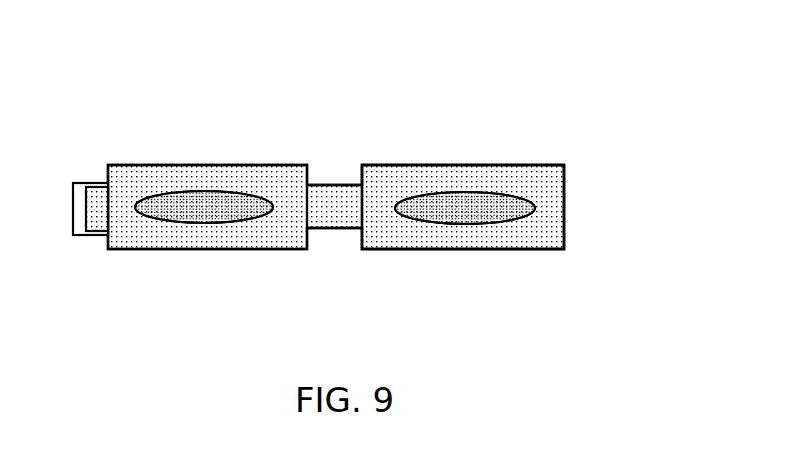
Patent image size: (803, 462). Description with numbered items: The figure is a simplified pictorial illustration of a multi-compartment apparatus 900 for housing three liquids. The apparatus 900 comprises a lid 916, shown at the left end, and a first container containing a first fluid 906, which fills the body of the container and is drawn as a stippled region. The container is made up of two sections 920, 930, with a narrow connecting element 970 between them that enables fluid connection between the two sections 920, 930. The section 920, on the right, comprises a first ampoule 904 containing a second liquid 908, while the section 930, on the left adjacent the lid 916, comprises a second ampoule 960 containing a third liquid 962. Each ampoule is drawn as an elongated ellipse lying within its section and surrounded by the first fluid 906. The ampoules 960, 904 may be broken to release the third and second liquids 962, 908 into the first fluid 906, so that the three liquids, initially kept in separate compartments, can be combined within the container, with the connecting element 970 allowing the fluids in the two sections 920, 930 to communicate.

The multi-compartment apparatus 900 is at (578, 110).
The lid 916 is at (76, 182).
The second ampoule 960 is at (160, 190).
The third liquid 962 is at (205, 220).
The narrow connecting element 970 is at (332, 184).
The second liquid 908 is at (428, 193).
The first ampoule 904 is at (480, 193).
The first fluid 906 is at (533, 183).
The section 930 is at (290, 240).
The section 920 is at (475, 242).